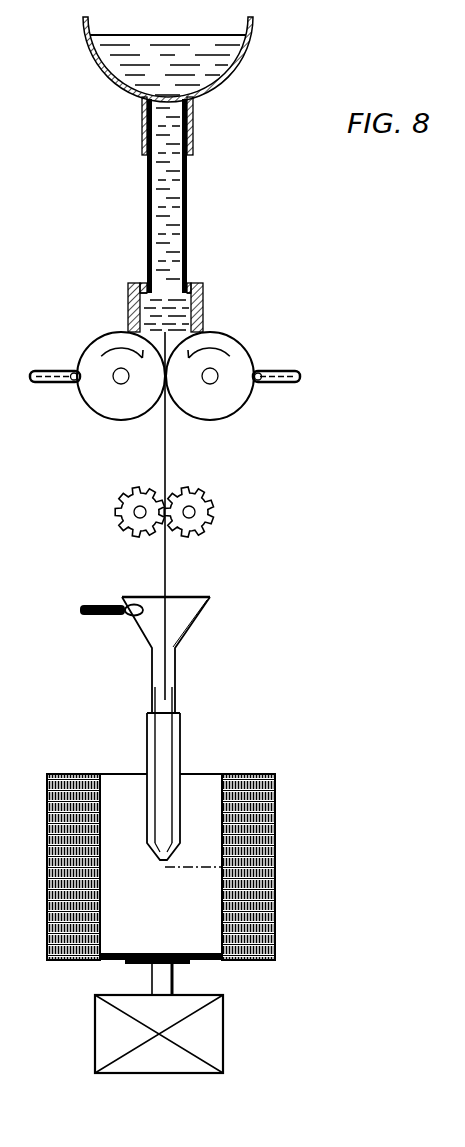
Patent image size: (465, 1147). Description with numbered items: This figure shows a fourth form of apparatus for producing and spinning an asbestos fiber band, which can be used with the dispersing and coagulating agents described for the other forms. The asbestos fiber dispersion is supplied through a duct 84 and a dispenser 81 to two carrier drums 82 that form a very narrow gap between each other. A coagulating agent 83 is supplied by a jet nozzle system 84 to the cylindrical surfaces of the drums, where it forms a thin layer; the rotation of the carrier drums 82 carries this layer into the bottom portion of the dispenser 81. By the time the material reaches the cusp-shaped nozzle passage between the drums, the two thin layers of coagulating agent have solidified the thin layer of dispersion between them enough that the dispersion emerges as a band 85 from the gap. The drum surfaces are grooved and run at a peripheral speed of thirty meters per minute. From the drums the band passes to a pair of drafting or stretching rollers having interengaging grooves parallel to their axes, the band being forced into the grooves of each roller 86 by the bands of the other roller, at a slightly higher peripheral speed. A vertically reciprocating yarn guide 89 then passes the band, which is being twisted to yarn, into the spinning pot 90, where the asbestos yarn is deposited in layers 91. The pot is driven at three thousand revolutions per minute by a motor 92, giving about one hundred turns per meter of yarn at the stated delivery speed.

The dispenser 81 is at (128, 285).
The carrier drums 82 is at (100, 404).
The coagulating agent 83 is at (103, 338).
The duct / jet nozzle system 84 is at (173, 198).
The band 85 is at (165, 455).
The drafting or stretching roller 86 is at (125, 522).
The yarn guide 89 is at (167, 741).
The spinning pot 90 is at (272, 806).
The layers 91 is at (272, 892).
The motor 92 is at (110, 1025).